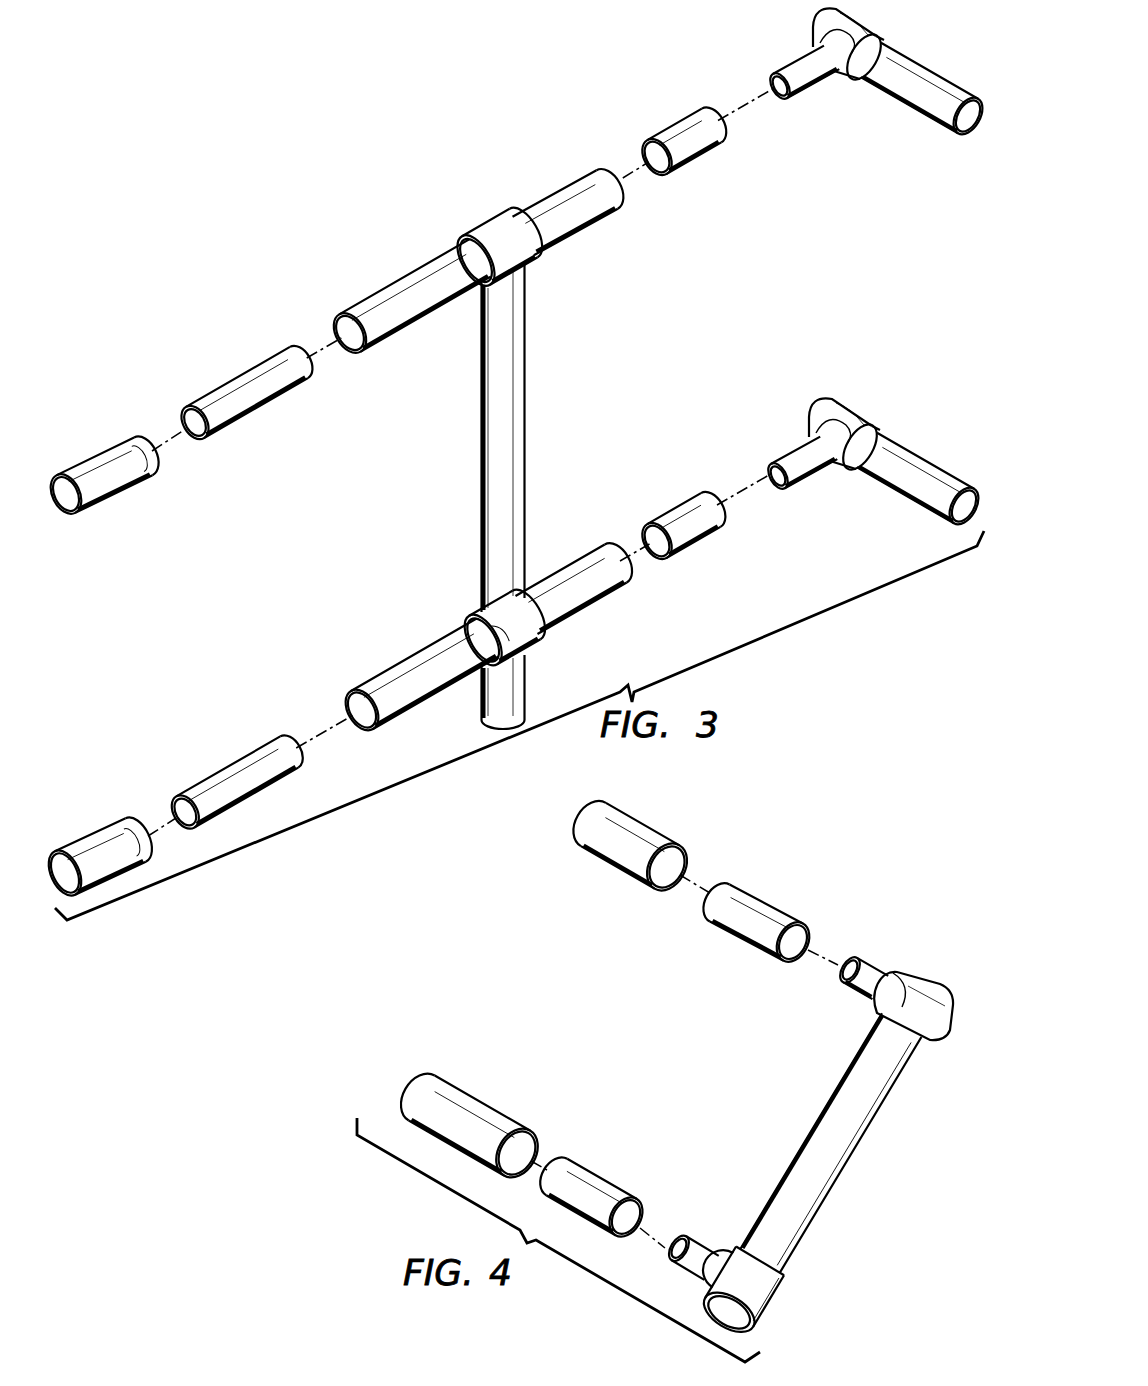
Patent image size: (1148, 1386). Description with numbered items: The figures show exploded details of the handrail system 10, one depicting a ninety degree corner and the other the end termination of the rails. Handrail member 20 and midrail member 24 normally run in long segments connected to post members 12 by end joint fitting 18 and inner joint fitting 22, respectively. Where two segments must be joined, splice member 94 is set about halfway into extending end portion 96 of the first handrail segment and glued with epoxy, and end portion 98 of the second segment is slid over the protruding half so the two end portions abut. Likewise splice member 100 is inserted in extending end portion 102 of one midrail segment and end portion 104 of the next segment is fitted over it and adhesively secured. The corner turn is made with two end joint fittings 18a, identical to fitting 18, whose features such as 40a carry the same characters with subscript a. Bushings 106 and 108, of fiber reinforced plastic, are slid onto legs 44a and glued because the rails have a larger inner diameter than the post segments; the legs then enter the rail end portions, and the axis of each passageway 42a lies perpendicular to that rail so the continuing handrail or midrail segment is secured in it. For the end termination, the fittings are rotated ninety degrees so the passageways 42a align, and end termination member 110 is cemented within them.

In FIG. 3, the handrail system 10 is at (376, 234).
In FIG. 3, the post member 12 is at (557, 462).
In FIG. 3, the end joint fitting 18 is at (497, 237).
In FIG. 3, the end joint fitting 18a is at (888, 24).
In FIG. 4, the end joint fitting 18a is at (943, 971).
In FIG. 3, the handrail member 20 is at (88, 476).
In FIG. 4, the handrail member 20 is at (637, 845).
In FIG. 3, the inner joint fitting 22 is at (533, 640).
In FIG. 3, the midrail member 24 is at (83, 857).
In FIG. 4, the midrail member 24 is at (487, 1123).
In FIG. 3, the structural feature of end joint fitting 40a is at (852, 30).
In FIG. 4, the structural feature of end joint fitting 40a is at (801, 1130).
In FIG. 3, the passageway 42a is at (860, 80).
In FIG. 4, the passageway 42a is at (873, 1012).
In FIG. 3, the leg 44a is at (810, 101).
In FIG. 4, the leg 44a is at (883, 952).
In FIG. 3, the splice member 94 is at (246, 377).
In FIG. 3, the extending end portion 96 is at (137, 453).
In FIG. 3, the end portion 98 is at (357, 312).
In FIG. 3, the splice member 100 is at (263, 763).
In FIG. 3, the extending end portion 102 is at (132, 830).
In FIG. 3, the end portion 104 is at (368, 685).
In FIG. 3, the bushing 106 is at (673, 138).
In FIG. 4, the bushing 106 is at (770, 920).
In FIG. 3, the bushing 108 is at (670, 520).
In FIG. 4, the bushing 108 is at (598, 1200).
In FIG. 4, the end termination member 110 is at (823, 1190).